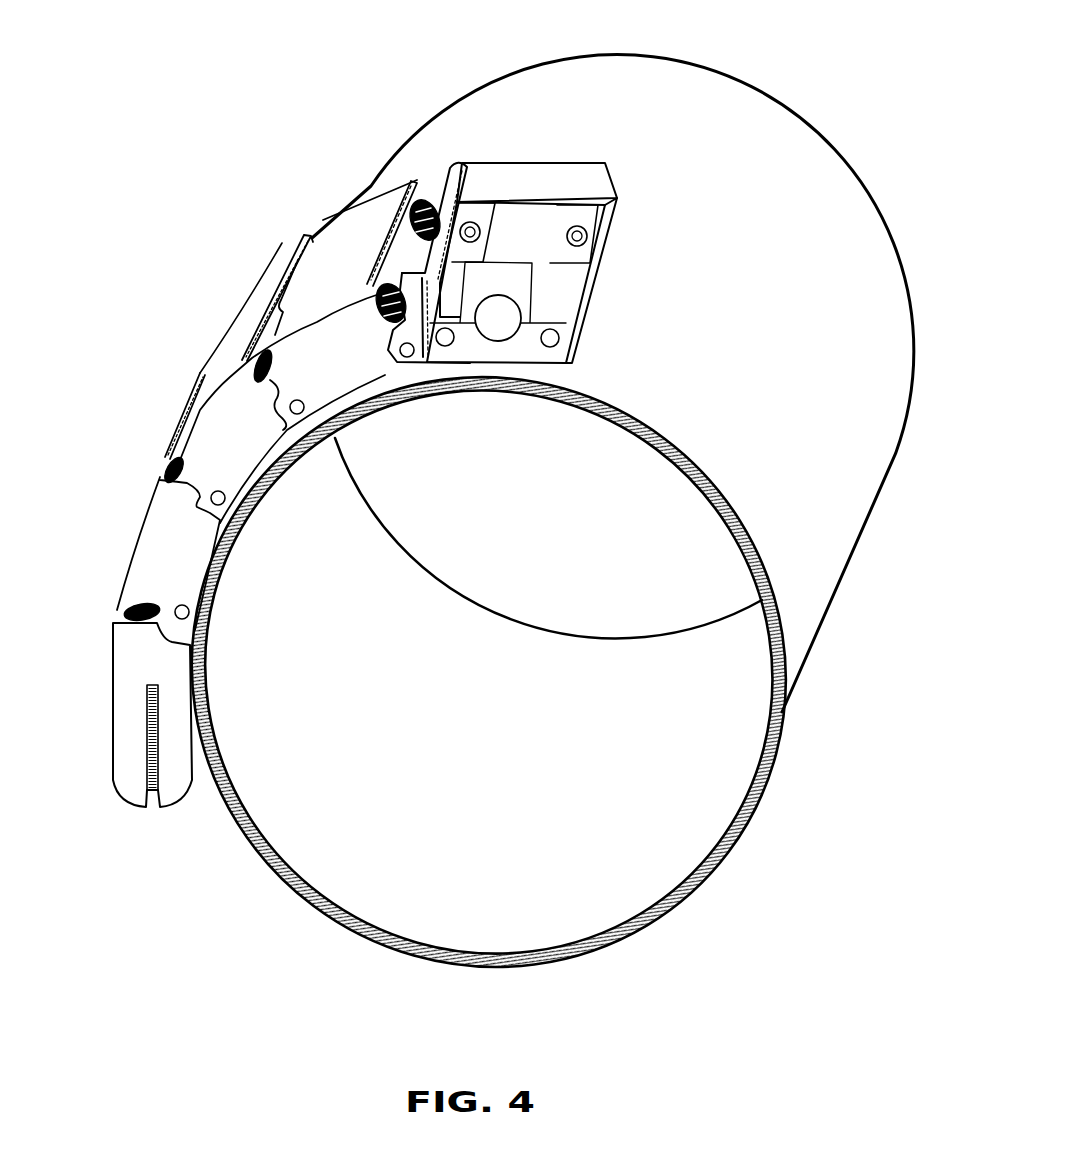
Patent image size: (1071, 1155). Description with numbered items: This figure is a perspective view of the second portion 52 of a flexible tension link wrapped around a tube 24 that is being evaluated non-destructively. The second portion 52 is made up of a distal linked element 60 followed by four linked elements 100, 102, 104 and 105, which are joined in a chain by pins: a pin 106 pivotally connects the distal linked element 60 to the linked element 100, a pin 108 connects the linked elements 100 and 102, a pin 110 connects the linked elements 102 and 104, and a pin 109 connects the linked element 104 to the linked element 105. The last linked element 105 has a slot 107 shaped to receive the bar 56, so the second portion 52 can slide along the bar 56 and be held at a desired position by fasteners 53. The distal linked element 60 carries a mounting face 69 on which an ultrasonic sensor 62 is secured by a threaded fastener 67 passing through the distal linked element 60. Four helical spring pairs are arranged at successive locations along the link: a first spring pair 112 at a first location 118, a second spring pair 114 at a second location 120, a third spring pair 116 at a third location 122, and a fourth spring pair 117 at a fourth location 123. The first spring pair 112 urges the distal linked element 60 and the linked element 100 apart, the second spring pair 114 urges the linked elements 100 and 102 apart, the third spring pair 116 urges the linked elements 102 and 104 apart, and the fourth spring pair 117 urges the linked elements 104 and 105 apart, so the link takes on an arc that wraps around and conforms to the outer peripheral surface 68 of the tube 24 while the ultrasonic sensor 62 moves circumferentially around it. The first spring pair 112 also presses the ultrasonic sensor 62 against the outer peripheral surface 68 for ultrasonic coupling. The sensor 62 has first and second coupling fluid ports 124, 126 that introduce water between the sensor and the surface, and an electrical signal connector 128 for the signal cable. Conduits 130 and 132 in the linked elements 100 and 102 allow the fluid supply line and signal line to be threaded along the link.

The tube 24 is at (769, 77).
The second portion 52 is at (156, 361).
The fasteners 53 is at (147, 778).
The bar 56 is at (160, 706).
The distal linked element 60 is at (470, 165).
The ultrasonic sensor 62 is at (540, 178).
The threaded fastener 67 is at (401, 200).
The outer peripheral surface 68 is at (620, 87).
The mounting face 69 is at (447, 347).
The linked element 100 is at (338, 238).
The linked element 102 is at (230, 333).
The linked element 104 is at (160, 550).
The linked element 105 is at (135, 697).
The pin 106 is at (409, 358).
The slot 107 is at (160, 742).
The pin 108 is at (302, 414).
The pin 109 is at (191, 612).
The pin 110 is at (224, 502).
The first helical spring pair 112 is at (433, 203).
The second helical spring pair 114 is at (282, 243).
The third helical spring pair 116 is at (180, 433).
The fourth helical spring pair 117 is at (128, 596).
The first location 118 is at (438, 166).
The second location 120 is at (297, 246).
The third location 122 is at (155, 460).
The fourth location 123 is at (106, 604).
The first coupling fluid port 124 is at (468, 380).
The second coupling fluid port 126 is at (552, 338).
The electrical signal connector 128 is at (500, 318).
The conduit 130 is at (412, 240).
The conduit 132 is at (272, 288).